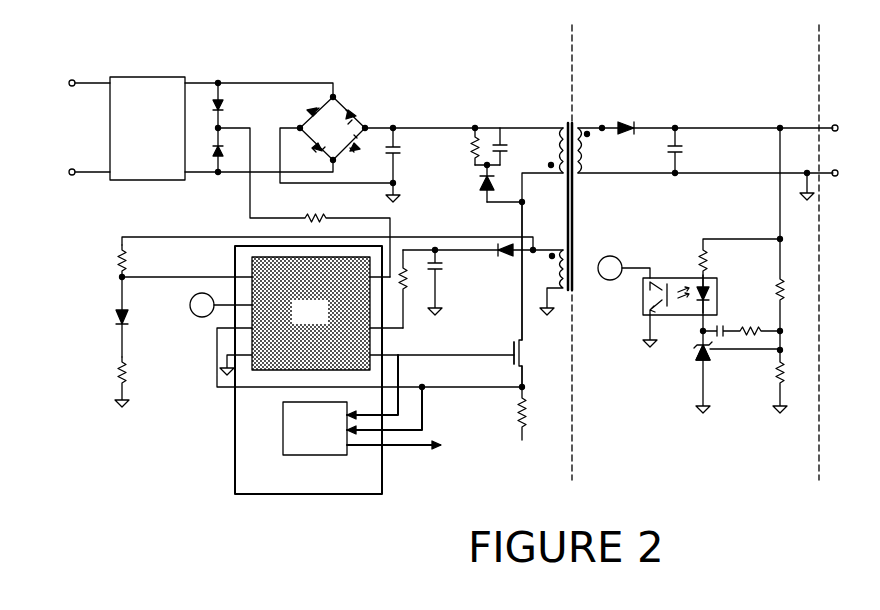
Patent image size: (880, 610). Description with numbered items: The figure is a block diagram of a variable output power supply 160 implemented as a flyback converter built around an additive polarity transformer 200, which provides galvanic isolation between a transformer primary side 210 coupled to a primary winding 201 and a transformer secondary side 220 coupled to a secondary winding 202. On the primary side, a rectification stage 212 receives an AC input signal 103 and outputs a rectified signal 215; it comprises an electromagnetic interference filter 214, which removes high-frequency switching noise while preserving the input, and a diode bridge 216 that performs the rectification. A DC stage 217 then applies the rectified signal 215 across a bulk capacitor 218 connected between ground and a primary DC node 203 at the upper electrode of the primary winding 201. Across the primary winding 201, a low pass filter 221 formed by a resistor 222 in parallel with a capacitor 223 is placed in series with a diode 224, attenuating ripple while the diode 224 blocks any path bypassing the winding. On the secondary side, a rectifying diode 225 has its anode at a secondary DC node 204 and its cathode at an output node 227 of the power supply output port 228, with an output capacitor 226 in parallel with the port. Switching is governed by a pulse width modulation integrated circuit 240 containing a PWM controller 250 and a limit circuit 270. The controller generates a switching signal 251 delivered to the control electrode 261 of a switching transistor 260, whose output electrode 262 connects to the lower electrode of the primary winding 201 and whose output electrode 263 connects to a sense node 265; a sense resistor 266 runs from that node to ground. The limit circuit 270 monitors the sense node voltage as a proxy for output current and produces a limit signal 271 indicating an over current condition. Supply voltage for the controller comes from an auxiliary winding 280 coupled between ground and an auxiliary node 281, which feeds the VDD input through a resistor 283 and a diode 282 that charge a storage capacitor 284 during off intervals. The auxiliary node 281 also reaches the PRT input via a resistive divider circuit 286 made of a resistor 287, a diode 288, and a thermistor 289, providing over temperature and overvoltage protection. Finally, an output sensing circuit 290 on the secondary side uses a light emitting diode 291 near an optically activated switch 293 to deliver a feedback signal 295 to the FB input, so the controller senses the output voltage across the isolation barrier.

The AC input signal 103 is at (56, 139).
The transformer primary side 210 is at (557, 46).
The rectification stage 212 is at (365, 66).
The DC stage 217 is at (557, 66).
The rectified signal 215 is at (391, 104).
The transformer secondary side 220 is at (804, 46).
The additive polarity transformer 200 is at (563, 199).
The primary winding 201 is at (560, 125).
The secondary winding 202 is at (580, 175).
The primary DC node 203 is at (475, 126).
The secondary DC node 204 is at (602, 127).
The electromagnetic interference filter 214 is at (147, 128).
The diode bridge 216 is at (349, 135).
The bulk capacitor 218 is at (397, 168).
The low pass filter 221 is at (495, 162).
The resistor 222 is at (472, 148).
The capacitor 223 is at (503, 152).
The diode 224 is at (485, 192).
The rectifying diode 225 is at (631, 112).
The output capacitor 226 is at (680, 157).
The output node 227 is at (677, 127).
The power supply output port 228 is at (838, 112).
The pulse width modulation integrated circuit 240 is at (356, 370).
The PWM controller 250 is at (311, 313).
The switching signal 251 is at (392, 352).
The switching transistor 260 is at (521, 294).
The control electrode 261 is at (515, 358).
The output electrode 262 is at (518, 334).
The output electrode 263 is at (524, 372).
The sense node 265 is at (524, 392).
The sense resistor 266 is at (498, 405).
The limit circuit 270 is at (283, 428).
The limit signal 271 is at (422, 442).
The auxiliary winding 280 is at (555, 230).
The auxiliary node 281 is at (560, 252).
The diode 282 is at (506, 252).
The resistor 283 is at (405, 290).
The storage capacitor 284 is at (440, 263).
The resistive divider circuit 286 is at (310, 296).
The resistor 287 is at (133, 263).
The diode 288 is at (133, 320).
The thermistor 289 is at (138, 371).
The output sensing circuit 290 is at (689, 297).
The light emitting diode 291 is at (706, 285).
The optically activated switch 293 is at (660, 282).
The feedback signal 295 is at (641, 262).
The variable output power supply 160 is at (698, 475).